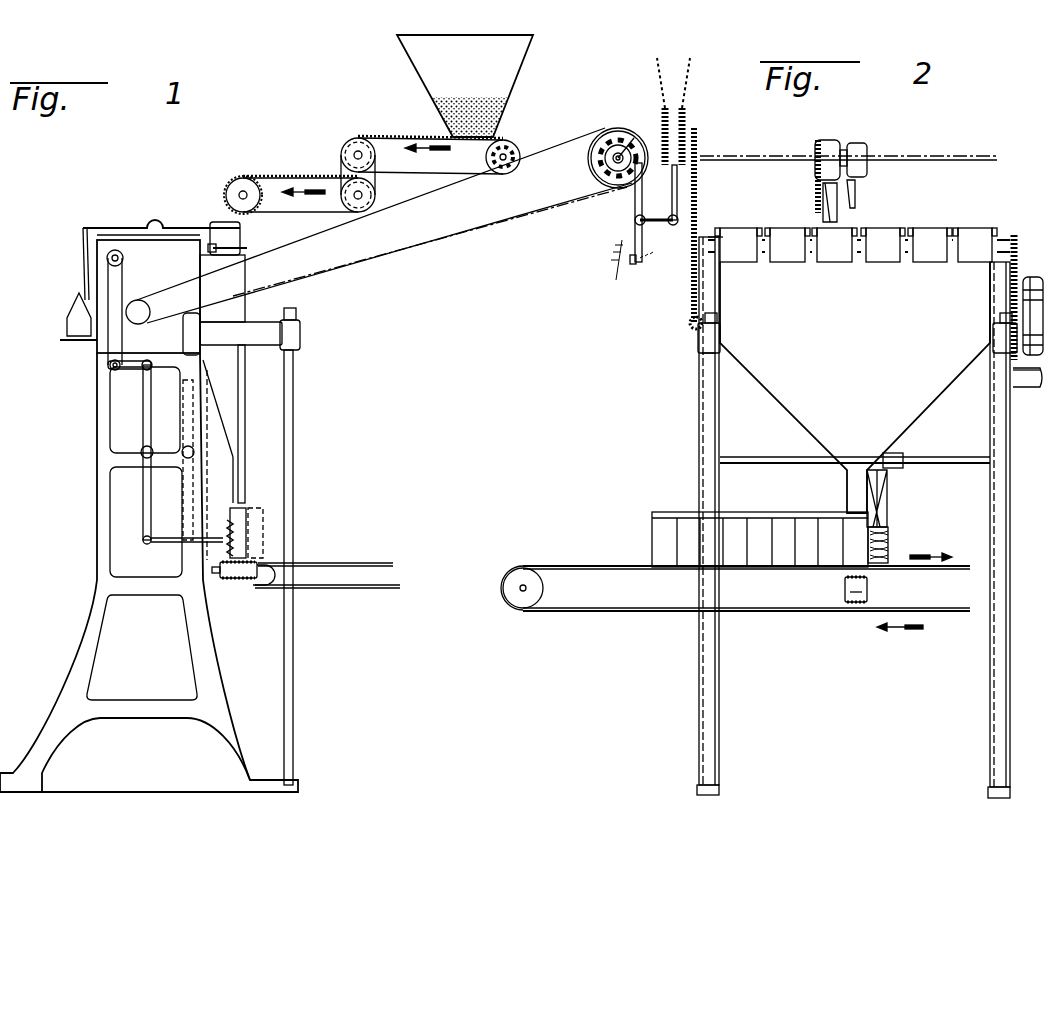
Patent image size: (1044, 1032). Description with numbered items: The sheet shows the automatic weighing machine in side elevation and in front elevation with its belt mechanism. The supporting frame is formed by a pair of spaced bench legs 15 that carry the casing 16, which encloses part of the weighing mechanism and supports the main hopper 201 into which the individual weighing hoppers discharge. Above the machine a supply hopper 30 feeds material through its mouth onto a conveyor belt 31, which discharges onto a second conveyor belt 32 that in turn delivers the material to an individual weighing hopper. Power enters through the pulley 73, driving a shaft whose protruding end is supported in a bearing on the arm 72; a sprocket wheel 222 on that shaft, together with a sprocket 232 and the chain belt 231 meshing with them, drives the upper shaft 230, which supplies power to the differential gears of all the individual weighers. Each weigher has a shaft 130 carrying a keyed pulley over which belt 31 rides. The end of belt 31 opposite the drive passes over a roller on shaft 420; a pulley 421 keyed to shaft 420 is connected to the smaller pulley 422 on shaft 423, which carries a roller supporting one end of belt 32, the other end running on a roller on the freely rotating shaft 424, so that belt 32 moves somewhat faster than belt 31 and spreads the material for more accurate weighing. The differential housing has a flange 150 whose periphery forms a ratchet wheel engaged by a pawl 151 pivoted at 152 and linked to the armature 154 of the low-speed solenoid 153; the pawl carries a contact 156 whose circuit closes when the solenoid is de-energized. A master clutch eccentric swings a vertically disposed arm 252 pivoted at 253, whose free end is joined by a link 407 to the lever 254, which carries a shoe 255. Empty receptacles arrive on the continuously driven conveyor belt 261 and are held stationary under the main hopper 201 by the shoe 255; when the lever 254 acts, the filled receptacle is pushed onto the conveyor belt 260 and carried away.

In FIG. 1, the bench legs 15 is at (98, 560).
In FIG. 2, the casing 16 is at (698, 356).
In FIG. 1, the supply hopper 30 is at (512, 78).
In FIG. 1, the conveyor belt 31 is at (418, 182).
In FIG. 1, the conveyor belt 32 is at (283, 220).
In FIG. 2, the arm 72 is at (1033, 386).
In FIG. 2, the pulley 73 is at (1030, 274).
In FIG. 1, the shaft 130 is at (510, 144).
In FIG. 1, the flange 150 is at (612, 148).
In FIG. 1, the pawl 151 is at (634, 198).
In FIG. 1, the pivot 152 is at (636, 222).
In FIG. 1, the solenoid 153 is at (688, 108).
In FIG. 1, the armature 154 is at (678, 205).
In FIG. 1, the contact 156 is at (636, 262).
In FIG. 1, the main hopper 201 is at (240, 304).
In FIG. 2, the main hopper 201 is at (812, 412).
In FIG. 1, the sprocket wheel 222 is at (170, 275).
In FIG. 2, the sprocket wheel 222 is at (694, 323).
In FIG. 1, the upper shaft 230 is at (624, 146).
In FIG. 2, the upper shaft 230 is at (780, 148).
In FIG. 1, the belt 231 is at (454, 242).
In FIG. 1, the sprocket 232 is at (628, 130).
In FIG. 2, the sprocket 232 is at (694, 130).
In FIG. 1, the arm 252 is at (116, 330).
In FIG. 1, the pivot point 253 is at (118, 252).
In FIG. 1, the lever 254 is at (143, 412).
In FIG. 1, the shoe 255 is at (230, 520).
In FIG. 1, the conveyor belt 260 is at (388, 550).
In FIG. 2, the conveyor belt 260 is at (852, 604).
In FIG. 1, the conveyor belt 261 is at (222, 578).
In FIG. 2, the conveyor belt 261 is at (610, 548).
In FIG. 1, the link 407 is at (132, 376).
In FIG. 1, the shaft 420 is at (360, 150).
In FIG. 1, the pulley 421 is at (356, 140).
In FIG. 1, the pulley 422 is at (350, 208).
In FIG. 1, the shaft 423 is at (360, 195).
In FIG. 1, the shaft 424 is at (247, 190).